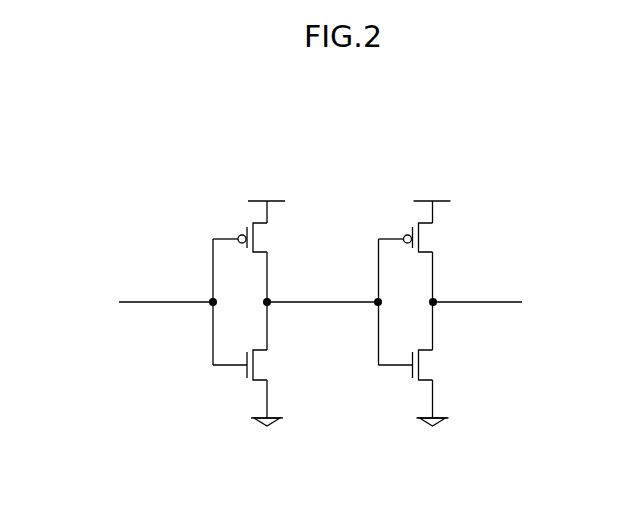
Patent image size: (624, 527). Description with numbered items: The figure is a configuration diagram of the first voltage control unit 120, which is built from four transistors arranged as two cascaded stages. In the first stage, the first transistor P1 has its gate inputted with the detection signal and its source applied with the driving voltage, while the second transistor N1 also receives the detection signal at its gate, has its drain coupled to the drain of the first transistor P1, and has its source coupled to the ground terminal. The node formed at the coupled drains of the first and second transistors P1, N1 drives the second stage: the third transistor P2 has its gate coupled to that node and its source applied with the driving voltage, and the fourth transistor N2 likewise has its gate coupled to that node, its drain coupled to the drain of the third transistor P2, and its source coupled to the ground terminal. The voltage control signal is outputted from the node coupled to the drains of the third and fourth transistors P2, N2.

The first voltage control unit 120 is at (603, 138).
The first transistor P1 is at (265, 237).
The second transistor N1 is at (269, 365).
The third transistor P2 is at (431, 237).
The fourth transistor N2 is at (435, 365).